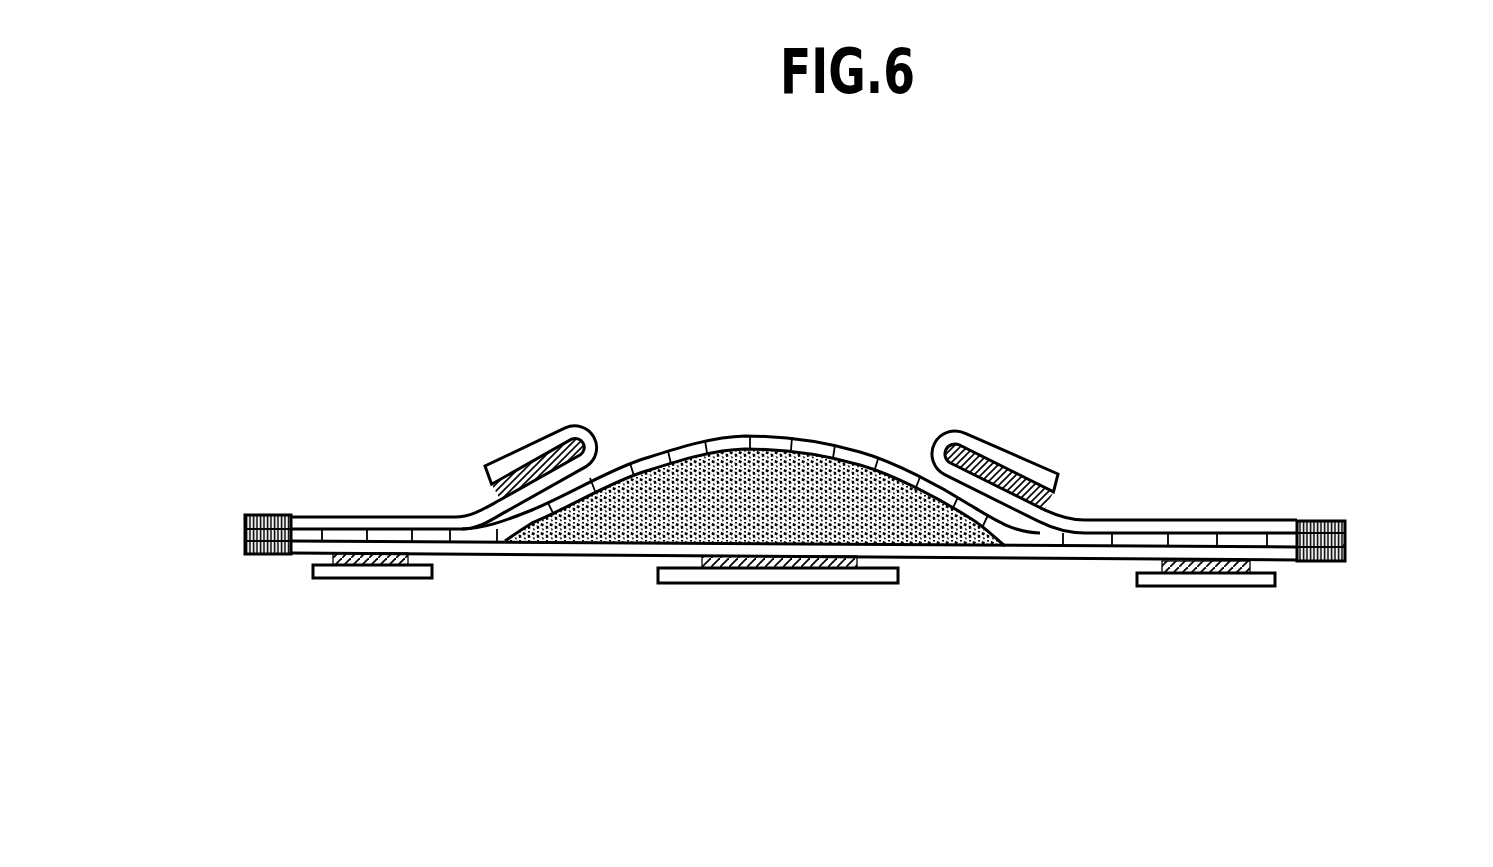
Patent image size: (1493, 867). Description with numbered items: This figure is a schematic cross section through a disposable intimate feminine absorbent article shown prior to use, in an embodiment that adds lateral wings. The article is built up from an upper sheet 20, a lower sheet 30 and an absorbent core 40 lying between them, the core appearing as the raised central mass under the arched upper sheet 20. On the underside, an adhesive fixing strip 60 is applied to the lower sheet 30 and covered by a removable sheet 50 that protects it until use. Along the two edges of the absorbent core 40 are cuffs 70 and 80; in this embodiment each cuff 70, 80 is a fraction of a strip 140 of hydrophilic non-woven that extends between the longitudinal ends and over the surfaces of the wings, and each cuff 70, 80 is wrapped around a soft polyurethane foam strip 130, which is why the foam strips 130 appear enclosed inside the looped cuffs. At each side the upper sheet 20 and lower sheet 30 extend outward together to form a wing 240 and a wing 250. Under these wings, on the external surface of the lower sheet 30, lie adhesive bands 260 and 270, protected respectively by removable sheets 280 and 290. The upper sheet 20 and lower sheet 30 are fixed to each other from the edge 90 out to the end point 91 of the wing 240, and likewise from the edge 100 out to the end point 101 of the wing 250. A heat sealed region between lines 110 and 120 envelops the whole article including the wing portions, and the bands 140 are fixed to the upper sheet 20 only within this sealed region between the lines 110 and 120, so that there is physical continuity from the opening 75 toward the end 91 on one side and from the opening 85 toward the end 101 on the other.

The upper sheet 20 is at (728, 437).
The lower sheet 30 is at (582, 549).
The absorbent core 40 is at (788, 457).
The removable sheet 50 is at (690, 574).
The adhesive fixing strip 60 is at (783, 569).
The cuff 70 is at (565, 420).
The opening 75 is at (612, 452).
The cuff 80 is at (968, 428).
The opening 85 is at (922, 456).
The edge 90 is at (527, 543).
The end point 91 is at (245, 533).
The edge 100 is at (1000, 543).
The end point 101 is at (1348, 545).
The line 110 is at (287, 516).
The line 120 is at (245, 516).
The soft polyurethane foam strip 130 is at (508, 458).
The strip 140 is at (483, 510).
The wing 240 is at (500, 298).
The wing 250 is at (1345, 317).
The adhesive band 260 is at (350, 579).
The adhesive band 270 is at (1237, 587).
The removable sheet 280 is at (383, 574).
The removable sheet 290 is at (1172, 587).